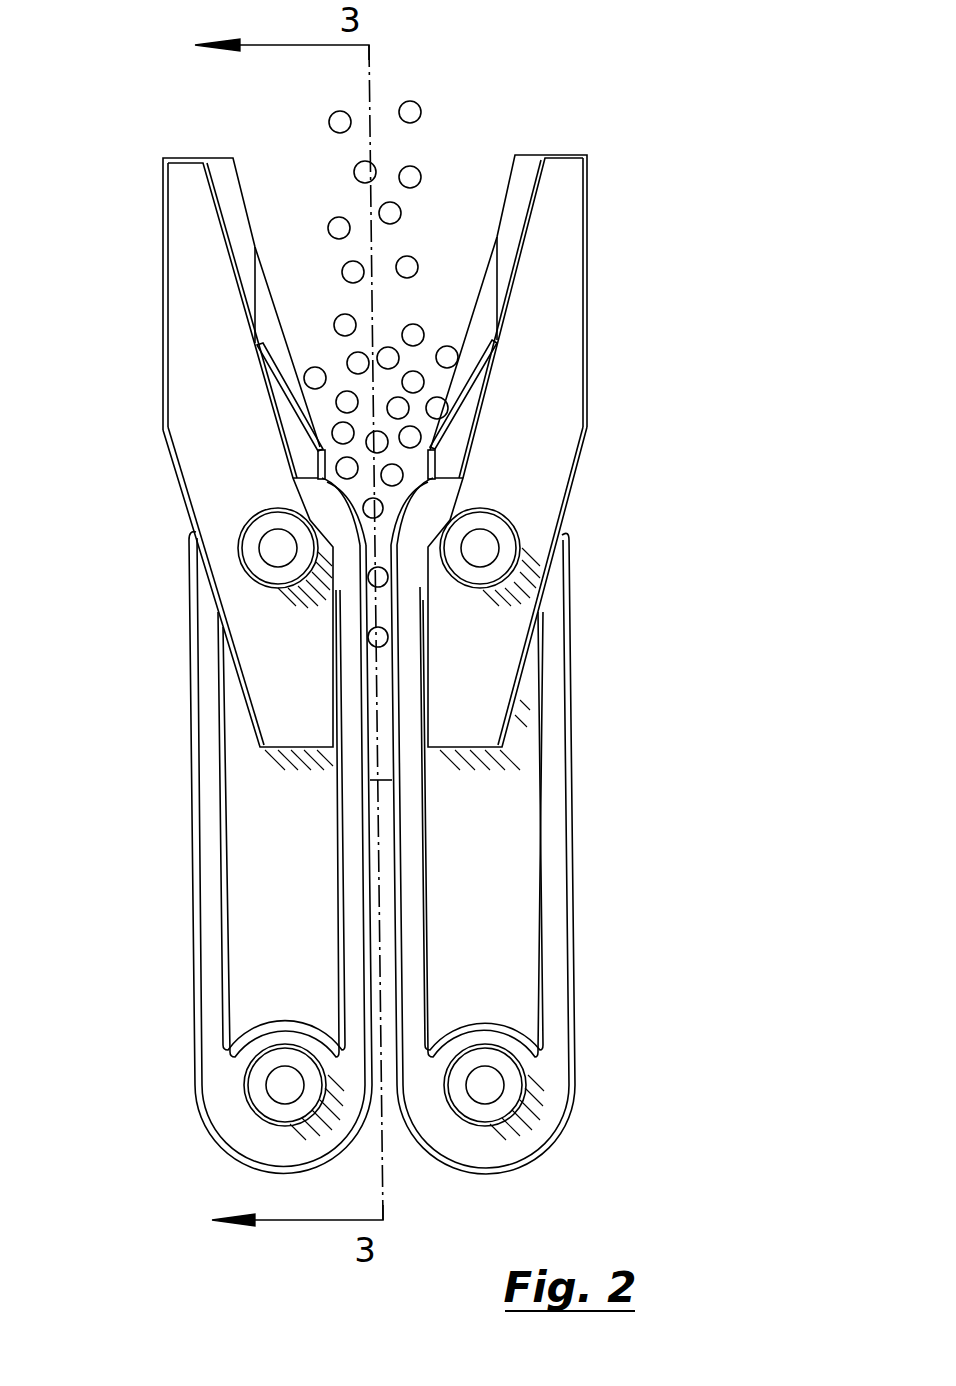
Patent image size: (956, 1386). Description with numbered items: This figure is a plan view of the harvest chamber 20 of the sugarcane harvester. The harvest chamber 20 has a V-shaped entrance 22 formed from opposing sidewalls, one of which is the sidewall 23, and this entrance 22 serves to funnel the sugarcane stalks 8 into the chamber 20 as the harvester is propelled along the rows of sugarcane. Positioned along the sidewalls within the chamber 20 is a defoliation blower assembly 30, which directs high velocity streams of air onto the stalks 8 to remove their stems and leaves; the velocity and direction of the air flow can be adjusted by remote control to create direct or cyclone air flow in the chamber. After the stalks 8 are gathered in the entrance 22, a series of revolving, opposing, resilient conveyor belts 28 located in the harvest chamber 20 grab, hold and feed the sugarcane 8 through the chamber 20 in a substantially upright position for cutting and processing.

The stalks 8 is at (338, 232).
The harvest chamber 20 is at (132, 490).
The V-shaped entrance 22 is at (447, 223).
The sidewall 23 is at (218, 215).
The conveyor belts 28 is at (198, 857).
The defoliation blower assembly 30 is at (290, 423).